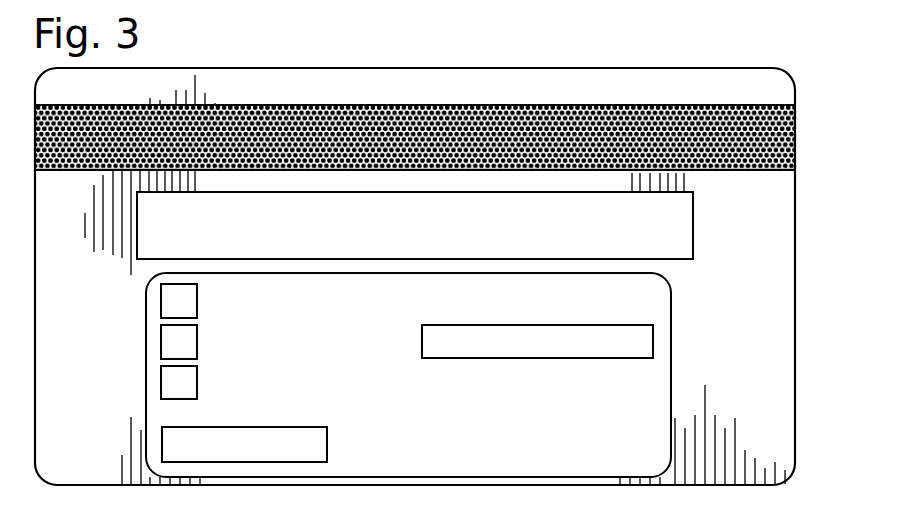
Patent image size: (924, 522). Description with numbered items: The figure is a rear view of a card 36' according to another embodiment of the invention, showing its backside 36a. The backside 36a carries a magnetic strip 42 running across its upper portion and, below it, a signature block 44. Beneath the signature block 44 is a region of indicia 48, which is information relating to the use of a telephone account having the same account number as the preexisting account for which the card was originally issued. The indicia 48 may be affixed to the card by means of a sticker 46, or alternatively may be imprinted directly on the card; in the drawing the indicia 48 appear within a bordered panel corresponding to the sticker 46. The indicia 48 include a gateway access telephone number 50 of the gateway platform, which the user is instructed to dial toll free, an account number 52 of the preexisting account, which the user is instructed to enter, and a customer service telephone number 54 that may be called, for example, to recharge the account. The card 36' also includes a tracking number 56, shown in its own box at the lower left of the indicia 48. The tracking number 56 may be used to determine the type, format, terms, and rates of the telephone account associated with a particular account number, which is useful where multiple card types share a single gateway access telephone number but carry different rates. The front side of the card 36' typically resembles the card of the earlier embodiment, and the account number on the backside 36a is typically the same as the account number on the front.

The card 36' is at (441, 263).
The backside 36a is at (765, 257).
The magnetic strip 42 is at (793, 148).
The signature block 44 is at (696, 216).
The sticker 46 is at (672, 370).
The gateway access telephone number 50 is at (521, 301).
The account number 52 is at (572, 359).
The indicia 48 is at (465, 440).
The customer service telephone number 54 is at (561, 424).
The tracking number 56 is at (328, 443).